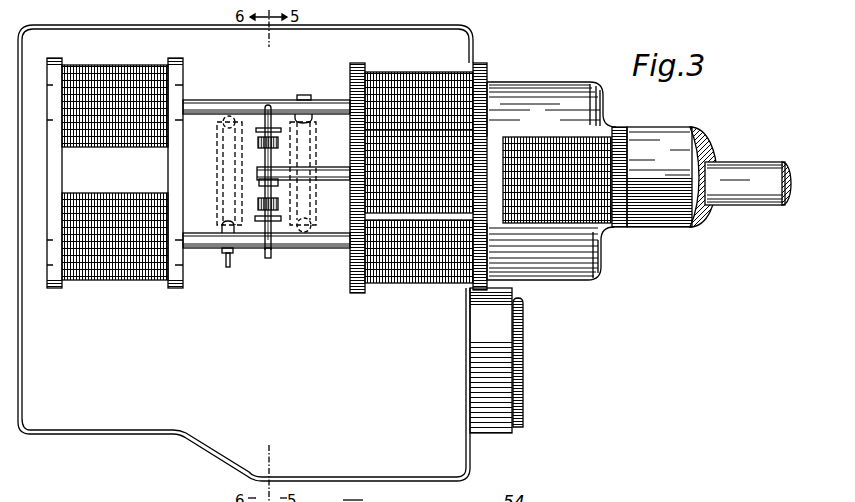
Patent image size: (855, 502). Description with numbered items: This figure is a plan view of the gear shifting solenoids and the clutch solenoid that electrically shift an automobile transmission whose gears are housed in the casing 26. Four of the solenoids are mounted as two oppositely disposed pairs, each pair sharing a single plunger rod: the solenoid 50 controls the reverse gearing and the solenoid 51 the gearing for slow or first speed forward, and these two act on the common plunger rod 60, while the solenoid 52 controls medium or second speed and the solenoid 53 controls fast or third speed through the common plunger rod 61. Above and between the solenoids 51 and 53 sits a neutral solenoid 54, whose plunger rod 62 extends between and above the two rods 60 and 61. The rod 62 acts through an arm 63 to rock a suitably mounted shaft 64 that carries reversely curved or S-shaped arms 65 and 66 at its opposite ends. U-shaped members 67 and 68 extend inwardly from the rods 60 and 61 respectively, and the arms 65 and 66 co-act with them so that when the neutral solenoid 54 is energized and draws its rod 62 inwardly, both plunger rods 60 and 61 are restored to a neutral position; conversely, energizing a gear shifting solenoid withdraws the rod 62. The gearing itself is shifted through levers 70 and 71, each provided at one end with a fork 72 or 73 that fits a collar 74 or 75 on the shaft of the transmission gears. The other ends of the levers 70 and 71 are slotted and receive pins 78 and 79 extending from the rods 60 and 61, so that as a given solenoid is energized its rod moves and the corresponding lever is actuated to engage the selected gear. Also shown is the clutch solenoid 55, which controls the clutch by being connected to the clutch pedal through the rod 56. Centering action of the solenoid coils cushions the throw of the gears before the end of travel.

The transmission casing 26 is at (448, 447).
The reverse solenoid 50 is at (132, 280).
The first speed solenoid 51 is at (410, 285).
The second speed solenoid 52 is at (97, 80).
The third speed solenoid 53 is at (413, 80).
The neutral solenoid 54 is at (453, 148).
The clutch solenoid 55 is at (572, 157).
The clutch rod 56 is at (650, 180).
The common plunger rod 60 is at (287, 242).
The common plunger rod 61 is at (263, 108).
The plunger rod 62 is at (325, 170).
The arm 63 is at (277, 181).
The shaft 64 is at (265, 196).
The S-shaped arm 65 is at (264, 221).
The S-shaped arm 66 is at (262, 130).
The U-shaped member 67 is at (267, 258).
The U-shaped member 68 is at (270, 107).
The lever 70 is at (224, 254).
The lever 71 is at (309, 103).
The fork 72 is at (228, 118).
The fork 73 is at (313, 228).
The collar 74 is at (221, 156).
The collar 75 is at (312, 143).
The pin 78 is at (228, 267).
The pin 79 is at (306, 96).